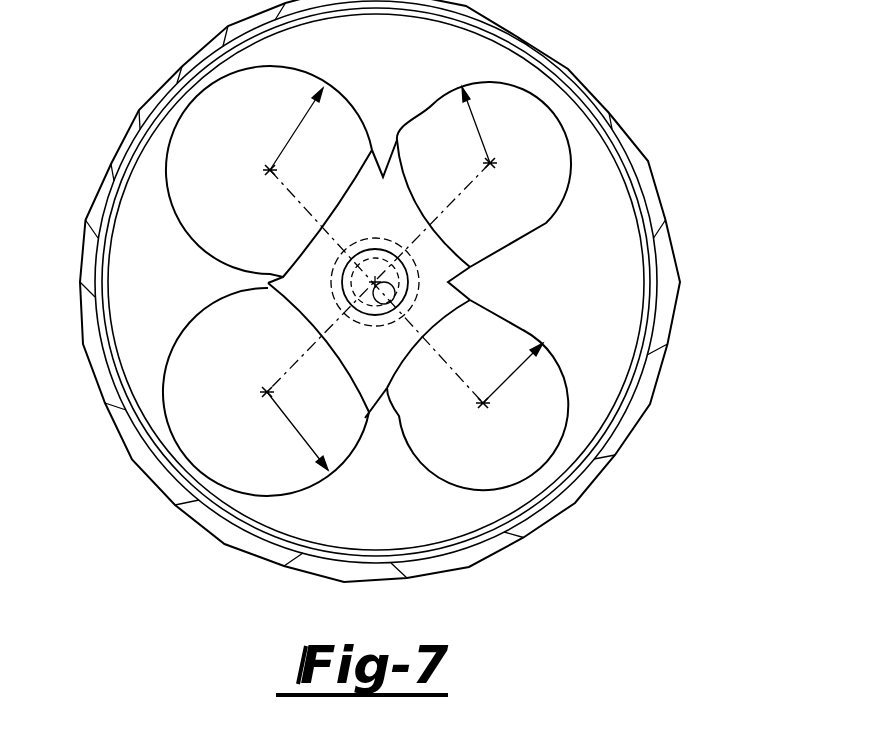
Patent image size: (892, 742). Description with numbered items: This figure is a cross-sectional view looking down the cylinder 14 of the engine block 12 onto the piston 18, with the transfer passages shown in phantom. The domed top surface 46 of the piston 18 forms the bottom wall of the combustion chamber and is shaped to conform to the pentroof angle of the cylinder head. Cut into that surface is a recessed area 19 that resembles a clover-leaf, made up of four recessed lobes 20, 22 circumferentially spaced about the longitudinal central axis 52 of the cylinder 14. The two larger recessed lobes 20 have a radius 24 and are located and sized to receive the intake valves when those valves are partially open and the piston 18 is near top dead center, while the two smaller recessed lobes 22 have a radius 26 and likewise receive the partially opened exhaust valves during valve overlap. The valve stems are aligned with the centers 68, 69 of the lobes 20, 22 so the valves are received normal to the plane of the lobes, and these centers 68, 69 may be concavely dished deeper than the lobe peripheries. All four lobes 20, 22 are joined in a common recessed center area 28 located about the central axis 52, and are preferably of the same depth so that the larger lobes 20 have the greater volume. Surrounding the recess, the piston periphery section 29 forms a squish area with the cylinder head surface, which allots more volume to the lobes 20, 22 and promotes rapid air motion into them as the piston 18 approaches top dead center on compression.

The engine block 12 is at (278, 566).
The cylinder 14 is at (426, 556).
The piston 18 is at (573, 478).
The recessed area 19 is at (318, 294).
The recessed lobes 20 is at (167, 155).
The recessed lobes 22 is at (541, 130).
The radius 24 is at (294, 133).
The radius 26 is at (472, 123).
The common recessed center area 28 is at (365, 360).
The piston periphery section 29 is at (600, 270).
The piston top surface 46 is at (484, 518).
The longitudinal central axis 52 is at (385, 291).
The centers 68 is at (268, 172).
The centers 69 is at (492, 166).